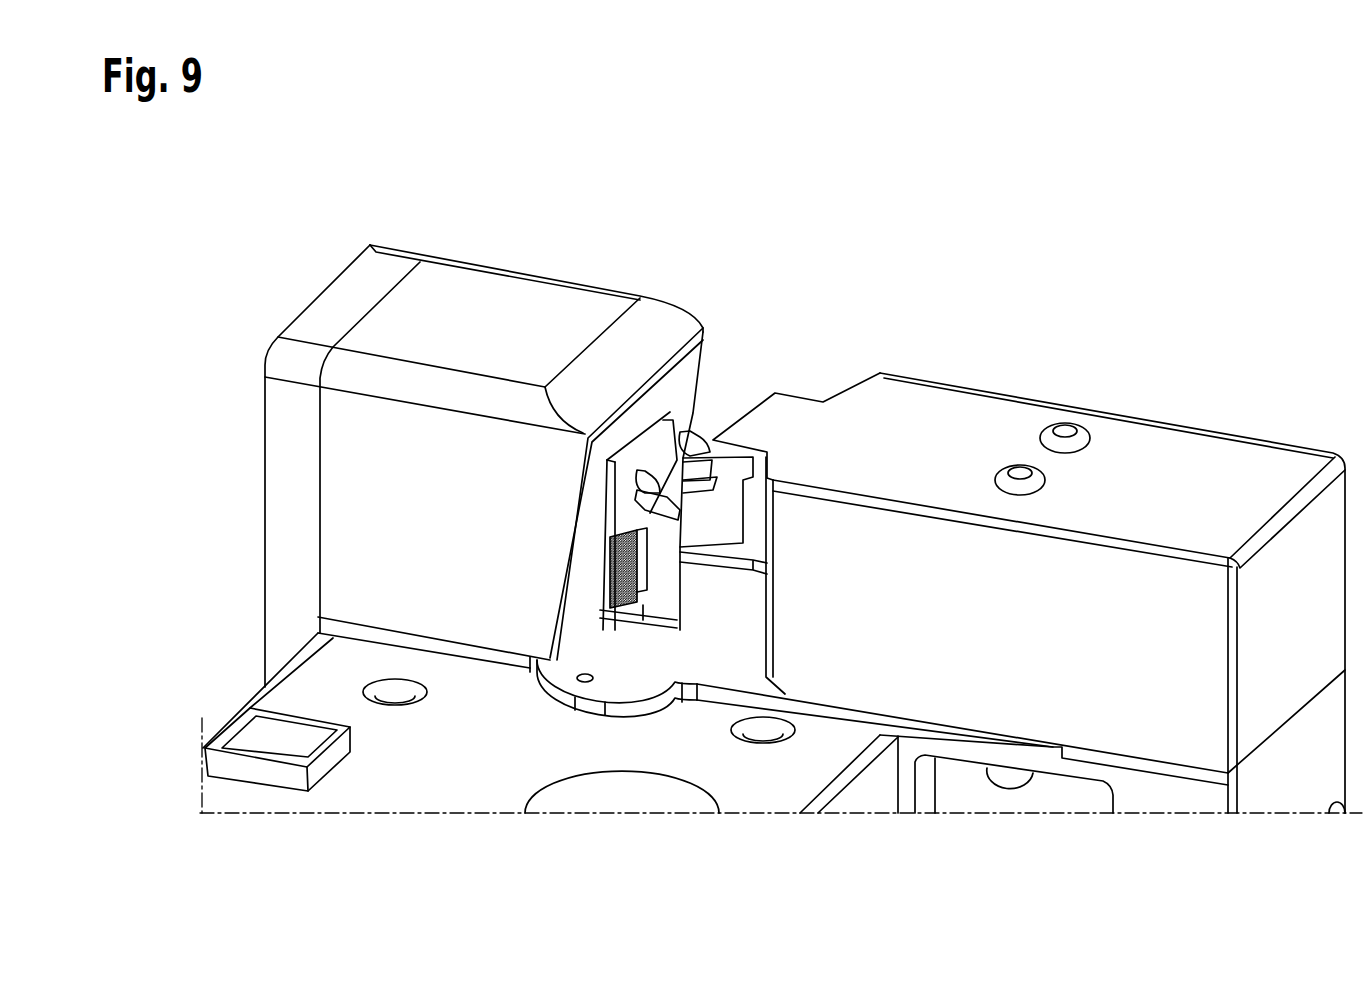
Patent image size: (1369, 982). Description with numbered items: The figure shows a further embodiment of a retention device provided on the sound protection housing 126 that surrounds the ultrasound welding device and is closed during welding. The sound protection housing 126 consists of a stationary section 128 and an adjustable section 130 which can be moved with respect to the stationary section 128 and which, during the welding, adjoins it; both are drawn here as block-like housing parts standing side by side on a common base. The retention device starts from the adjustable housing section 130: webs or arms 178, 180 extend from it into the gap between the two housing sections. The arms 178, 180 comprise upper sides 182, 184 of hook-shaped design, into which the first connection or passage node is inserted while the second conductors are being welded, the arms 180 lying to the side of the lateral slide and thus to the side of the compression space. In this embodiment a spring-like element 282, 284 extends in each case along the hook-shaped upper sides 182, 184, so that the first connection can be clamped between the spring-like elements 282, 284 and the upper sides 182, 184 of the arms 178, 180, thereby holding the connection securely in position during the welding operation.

The sound protection housing 126 is at (974, 113).
The stationary section 128 is at (518, 290).
The adjustable housing section 130 is at (847, 397).
The arm 178 is at (680, 523).
The arm 180 is at (700, 480).
The upper side 182 is at (648, 500).
The upper side 184 is at (700, 447).
The spring-like element 282 is at (640, 483).
The spring-like element 284 is at (688, 437).